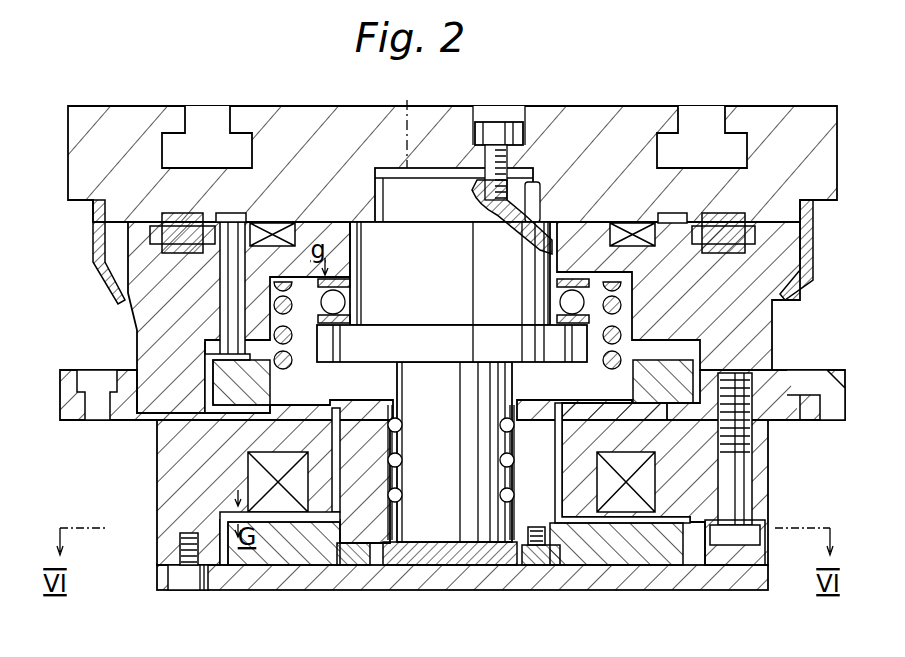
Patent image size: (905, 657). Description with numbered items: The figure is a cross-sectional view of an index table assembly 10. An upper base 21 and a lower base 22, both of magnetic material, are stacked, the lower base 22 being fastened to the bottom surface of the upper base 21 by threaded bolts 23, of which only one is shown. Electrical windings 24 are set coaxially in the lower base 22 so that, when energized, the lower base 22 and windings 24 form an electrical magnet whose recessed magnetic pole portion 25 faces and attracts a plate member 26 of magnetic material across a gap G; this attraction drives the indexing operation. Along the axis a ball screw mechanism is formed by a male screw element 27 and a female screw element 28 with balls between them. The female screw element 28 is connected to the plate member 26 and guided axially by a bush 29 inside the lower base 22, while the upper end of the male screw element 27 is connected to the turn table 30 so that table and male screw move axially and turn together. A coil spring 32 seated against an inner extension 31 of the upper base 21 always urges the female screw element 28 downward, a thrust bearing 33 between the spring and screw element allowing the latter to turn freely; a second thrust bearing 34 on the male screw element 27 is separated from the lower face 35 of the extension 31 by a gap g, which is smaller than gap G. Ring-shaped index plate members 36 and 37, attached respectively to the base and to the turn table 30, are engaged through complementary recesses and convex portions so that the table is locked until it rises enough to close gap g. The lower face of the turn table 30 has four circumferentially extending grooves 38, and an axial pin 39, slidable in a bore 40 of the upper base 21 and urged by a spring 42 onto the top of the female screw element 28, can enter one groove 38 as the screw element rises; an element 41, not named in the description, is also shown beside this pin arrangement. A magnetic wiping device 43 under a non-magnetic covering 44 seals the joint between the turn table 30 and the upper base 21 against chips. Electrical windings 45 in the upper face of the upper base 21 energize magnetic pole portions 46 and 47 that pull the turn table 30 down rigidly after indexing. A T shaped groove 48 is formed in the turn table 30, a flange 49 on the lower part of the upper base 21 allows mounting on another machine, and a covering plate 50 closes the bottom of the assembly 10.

The index table assembly 10 is at (780, 343).
The upper base 21 is at (140, 352).
The lower base 22 is at (158, 496).
The threaded bolt 23 is at (740, 478).
The electrical windings 24 is at (280, 462).
The magnetic pole portion 25 is at (222, 512).
The plate member 26 is at (310, 572).
The male screw element 27 is at (440, 185).
The female screw element 28 is at (360, 567).
The bush 29 is at (396, 440).
The turn table 30 is at (331, 118).
The inner extension 31 is at (323, 222).
The coil spring 32 is at (290, 288).
The thrust bearing 33 is at (332, 363).
The thrust bearing 34 is at (347, 302).
The lower face 35 is at (345, 278).
The index plate member 36 is at (192, 252).
The index plate member 37 is at (183, 222).
The circumferentially extending groove 38 is at (234, 218).
The axial pin 39 is at (212, 298).
The bore 40 is at (138, 298).
The pad 41 is at (228, 362).
The spring 42 is at (204, 358).
The wiping device 43 is at (812, 240).
The covering 44 is at (815, 262).
The electrical windings 45 is at (272, 232).
The magnetic pole portion 46 is at (585, 235).
The magnetic pole portion 47 is at (672, 223).
The T shaped groove 48 is at (702, 118).
The flange 49 is at (130, 420).
The covering plate 50 is at (195, 592).